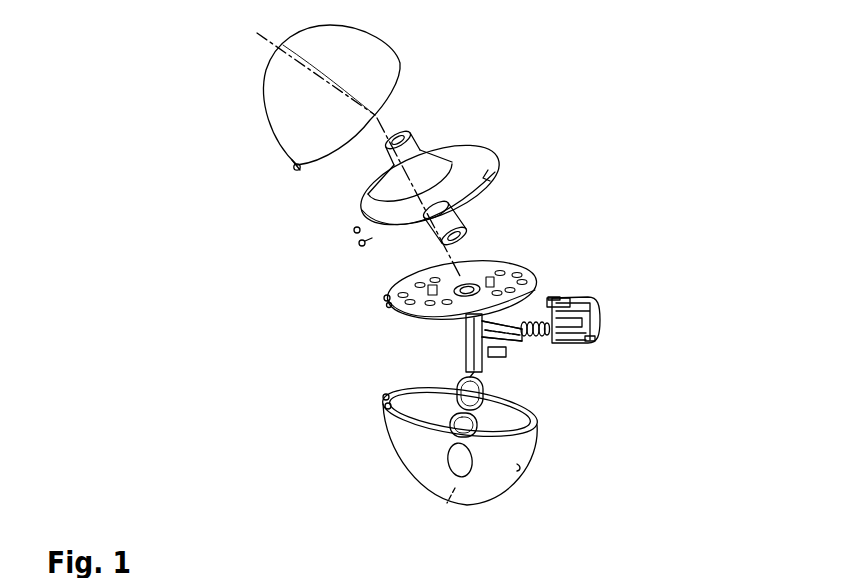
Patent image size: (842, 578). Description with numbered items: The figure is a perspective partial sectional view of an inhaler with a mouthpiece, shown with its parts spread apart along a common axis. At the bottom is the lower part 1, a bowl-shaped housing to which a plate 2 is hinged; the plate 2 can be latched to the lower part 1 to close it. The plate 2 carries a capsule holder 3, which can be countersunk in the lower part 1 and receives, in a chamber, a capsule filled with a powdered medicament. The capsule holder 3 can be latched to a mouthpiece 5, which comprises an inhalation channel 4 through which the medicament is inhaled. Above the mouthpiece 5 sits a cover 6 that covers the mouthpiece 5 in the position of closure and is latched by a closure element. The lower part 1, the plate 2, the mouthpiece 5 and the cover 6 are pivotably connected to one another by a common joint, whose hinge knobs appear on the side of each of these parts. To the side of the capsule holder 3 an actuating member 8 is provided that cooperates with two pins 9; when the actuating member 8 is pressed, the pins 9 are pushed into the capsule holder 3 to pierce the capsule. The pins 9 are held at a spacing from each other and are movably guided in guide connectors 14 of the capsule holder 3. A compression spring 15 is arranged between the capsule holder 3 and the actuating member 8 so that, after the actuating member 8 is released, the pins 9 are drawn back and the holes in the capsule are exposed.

The lower part 1 is at (413, 448).
The plate 2 is at (533, 268).
The capsule holder 3 is at (467, 343).
The inhalation channel 4 is at (400, 138).
The mouthpiece 5 is at (415, 143).
The cover 6 is at (377, 50).
The actuating member 8 is at (590, 318).
The pins 9 is at (592, 300).
The guide connectors 14 is at (513, 300).
The compression spring 15 is at (533, 335).